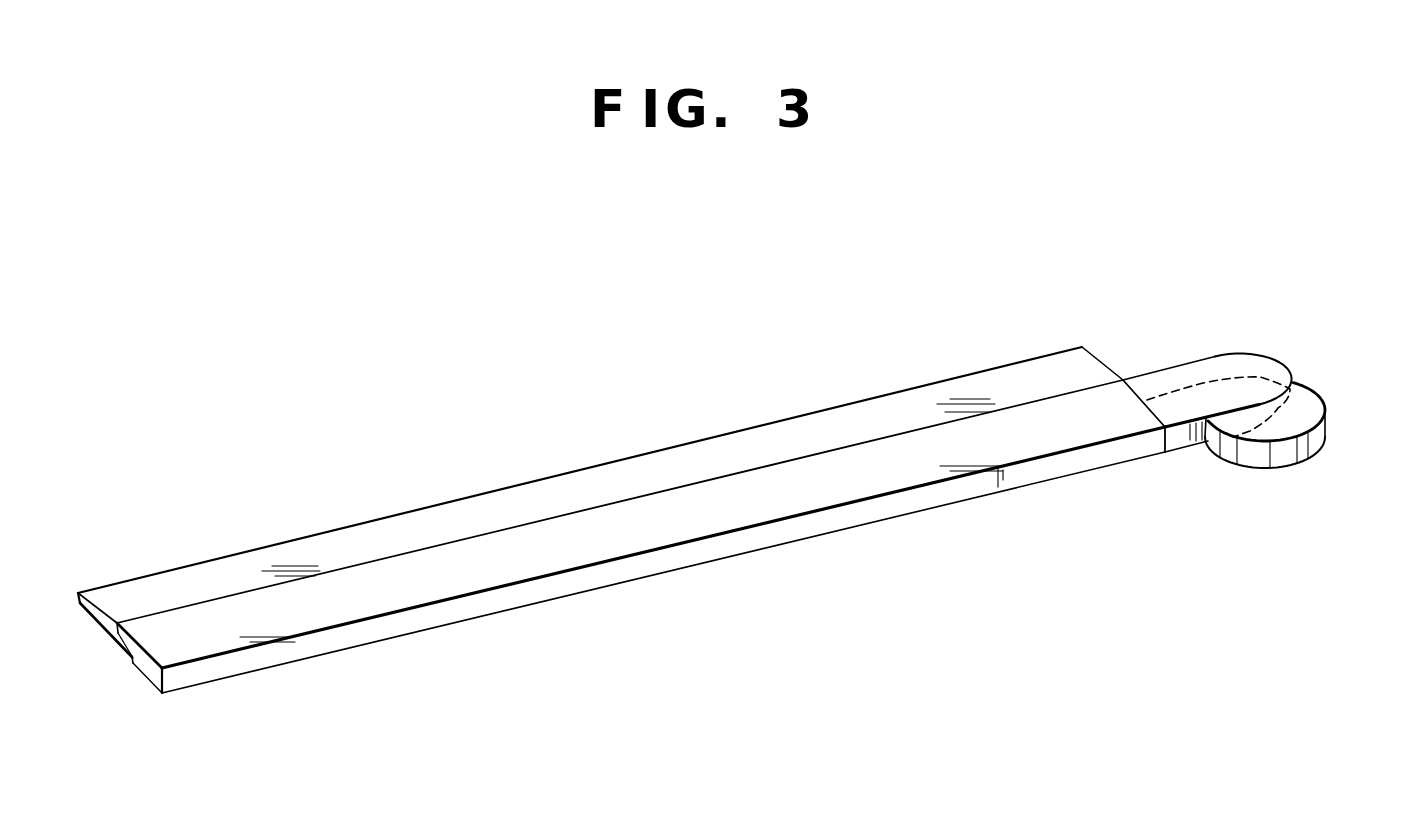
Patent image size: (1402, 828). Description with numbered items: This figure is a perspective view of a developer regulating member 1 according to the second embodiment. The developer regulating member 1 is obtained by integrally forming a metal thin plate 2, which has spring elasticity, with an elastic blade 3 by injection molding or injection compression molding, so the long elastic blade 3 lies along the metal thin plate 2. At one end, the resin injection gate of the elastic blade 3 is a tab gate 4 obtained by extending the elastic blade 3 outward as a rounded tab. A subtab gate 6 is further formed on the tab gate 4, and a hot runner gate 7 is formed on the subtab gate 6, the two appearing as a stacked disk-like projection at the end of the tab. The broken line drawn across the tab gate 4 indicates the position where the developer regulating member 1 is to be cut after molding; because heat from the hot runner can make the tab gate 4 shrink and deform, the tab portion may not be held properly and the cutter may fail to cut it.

The developer regulating member 1 is at (733, 278).
The metal thin plate 2 is at (468, 515).
The elastic blade 3 is at (495, 557).
The tab gate 4 is at (1208, 367).
The subtab gate 6 is at (1303, 403).
The hot runner gate 7 is at (1245, 460).